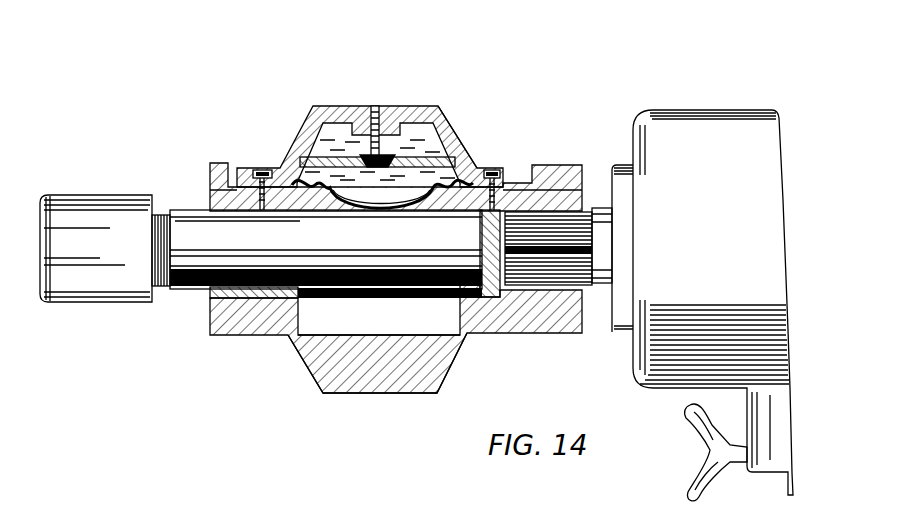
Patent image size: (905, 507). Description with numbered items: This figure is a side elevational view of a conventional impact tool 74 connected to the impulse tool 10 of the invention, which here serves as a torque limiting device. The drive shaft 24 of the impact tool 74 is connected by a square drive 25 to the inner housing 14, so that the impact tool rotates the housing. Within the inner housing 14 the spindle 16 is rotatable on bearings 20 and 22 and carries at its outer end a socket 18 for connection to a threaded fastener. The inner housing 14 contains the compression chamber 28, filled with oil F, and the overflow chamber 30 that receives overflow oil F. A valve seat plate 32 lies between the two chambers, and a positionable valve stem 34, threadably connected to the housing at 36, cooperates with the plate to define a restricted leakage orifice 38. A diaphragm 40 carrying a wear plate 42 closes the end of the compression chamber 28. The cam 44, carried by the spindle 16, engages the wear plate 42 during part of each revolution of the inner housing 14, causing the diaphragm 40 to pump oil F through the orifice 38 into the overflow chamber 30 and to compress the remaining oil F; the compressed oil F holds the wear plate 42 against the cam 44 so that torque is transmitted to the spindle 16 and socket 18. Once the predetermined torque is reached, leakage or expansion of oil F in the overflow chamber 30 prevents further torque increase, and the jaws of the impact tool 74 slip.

The impulse tool 10 is at (520, 85).
The inner housing 14 is at (550, 306).
The spindle 16 is at (187, 225).
The socket 18 is at (108, 215).
The bearing 20 is at (250, 290).
The bearing 22 is at (488, 284).
The drive shaft 24 is at (598, 218).
The square drive 25 is at (595, 233).
The compression chamber 28 is at (335, 120).
The overflow chamber 30 is at (437, 108).
The valve seat plate 32 is at (297, 162).
The valve stem 34 is at (375, 106).
The threaded connection 36 is at (390, 122).
The restricted leakage orifice 38 is at (330, 192).
The diaphragm 40 is at (433, 194).
The wear plate 42 is at (378, 212).
The cam 44 is at (375, 300).
The impact tool 74 is at (742, 130).
The oil F is at (437, 148).